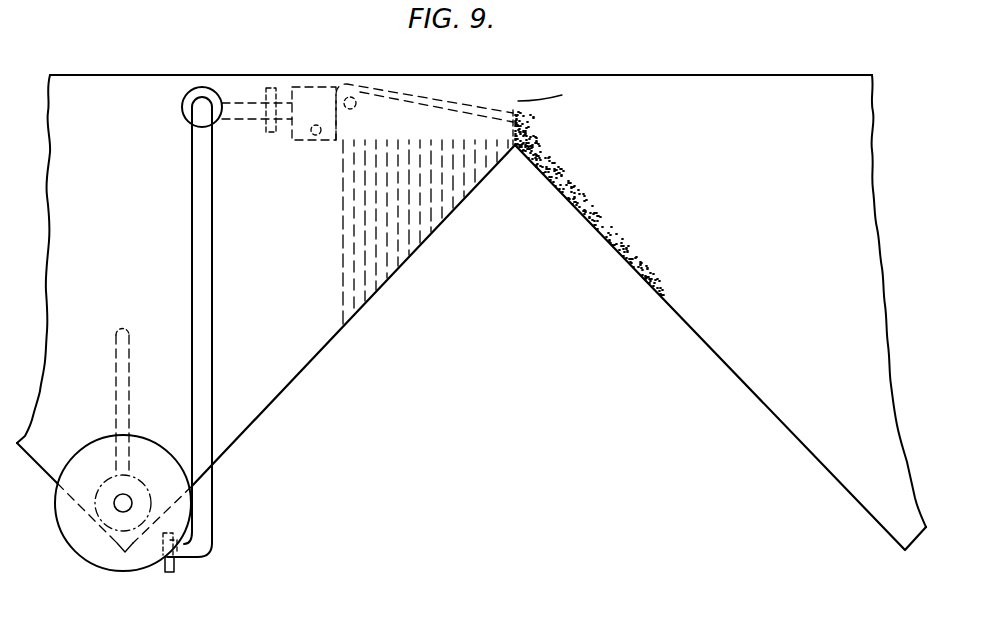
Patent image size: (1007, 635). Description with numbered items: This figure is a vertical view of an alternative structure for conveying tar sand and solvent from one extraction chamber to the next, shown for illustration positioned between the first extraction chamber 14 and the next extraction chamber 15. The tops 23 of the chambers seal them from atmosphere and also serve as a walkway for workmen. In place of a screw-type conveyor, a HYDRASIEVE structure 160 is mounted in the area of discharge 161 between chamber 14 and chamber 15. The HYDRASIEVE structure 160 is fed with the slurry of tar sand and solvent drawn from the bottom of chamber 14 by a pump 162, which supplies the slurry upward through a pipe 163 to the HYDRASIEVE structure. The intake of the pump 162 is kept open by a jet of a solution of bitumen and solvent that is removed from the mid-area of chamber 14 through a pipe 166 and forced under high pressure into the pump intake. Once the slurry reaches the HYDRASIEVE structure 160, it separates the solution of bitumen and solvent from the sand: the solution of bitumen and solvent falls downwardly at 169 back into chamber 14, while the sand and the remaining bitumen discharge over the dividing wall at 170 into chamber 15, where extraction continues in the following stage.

The tops of the chambers 23 is at (532, 75).
The extraction chamber 14 is at (286, 330).
The extraction chamber 15 is at (741, 338).
The HYDRASIEVE structure 160 is at (447, 125).
The area of discharge 161 is at (560, 96).
The pump 162 is at (108, 573).
The pipe 163 is at (212, 275).
The pipe 166 is at (113, 380).
The falling solution of bitumen and solvent 169 is at (368, 198).
The sand and remaining bitumen discharge 170 is at (580, 193).